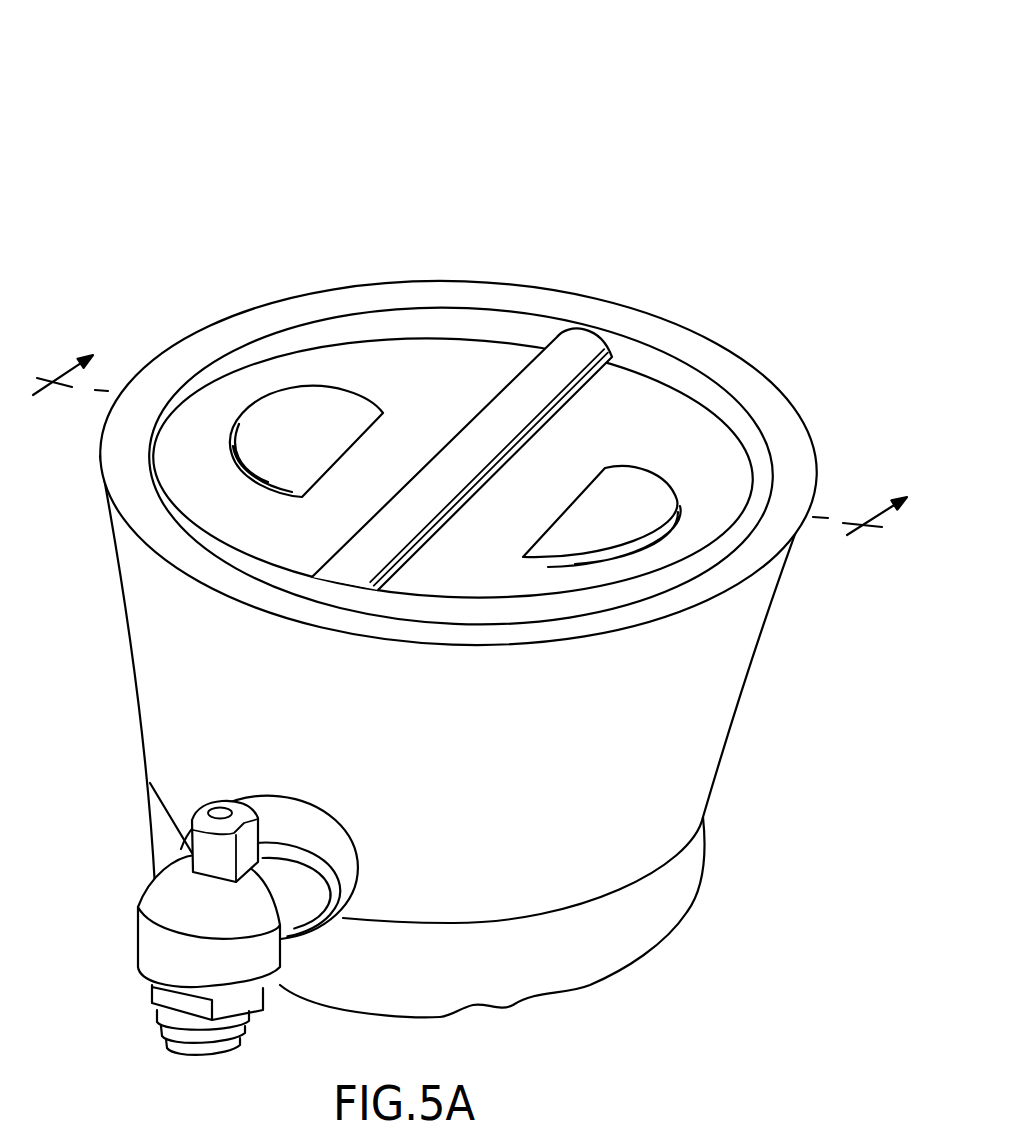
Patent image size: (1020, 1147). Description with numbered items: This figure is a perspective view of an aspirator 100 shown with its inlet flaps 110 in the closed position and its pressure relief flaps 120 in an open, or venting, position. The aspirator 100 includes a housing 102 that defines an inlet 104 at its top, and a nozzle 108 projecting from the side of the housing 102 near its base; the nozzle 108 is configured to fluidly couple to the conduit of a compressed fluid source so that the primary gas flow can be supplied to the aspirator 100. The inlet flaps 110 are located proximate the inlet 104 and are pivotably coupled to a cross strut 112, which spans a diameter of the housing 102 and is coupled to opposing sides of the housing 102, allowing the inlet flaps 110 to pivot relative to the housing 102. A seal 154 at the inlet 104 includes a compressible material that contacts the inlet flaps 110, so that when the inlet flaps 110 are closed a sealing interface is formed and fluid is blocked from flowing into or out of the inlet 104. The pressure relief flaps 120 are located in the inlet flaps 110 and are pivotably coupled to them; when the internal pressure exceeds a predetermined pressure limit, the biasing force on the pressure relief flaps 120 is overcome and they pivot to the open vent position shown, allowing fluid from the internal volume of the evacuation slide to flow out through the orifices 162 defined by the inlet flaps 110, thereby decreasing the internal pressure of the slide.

The aspirator 100 is at (180, 135).
The housing 102 is at (652, 793).
The inlet 104 is at (493, 338).
The nozzle 108 is at (193, 910).
The inlet flaps 110 is at (397, 357).
The cross strut 112 is at (350, 570).
The pressure relief flaps 120 is at (590, 490).
The seal 154 is at (738, 377).
The orifices 162 is at (685, 510).